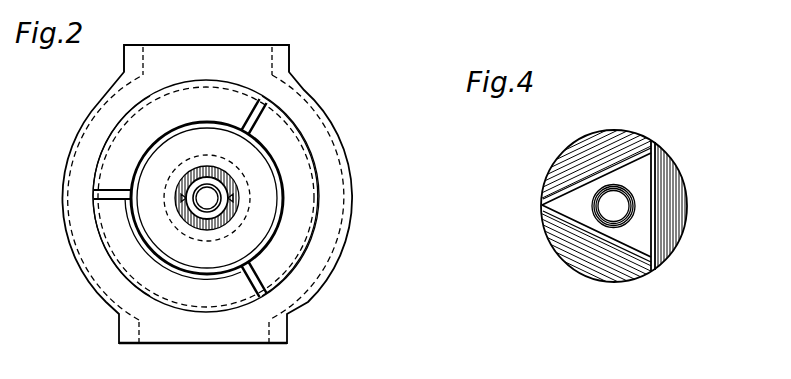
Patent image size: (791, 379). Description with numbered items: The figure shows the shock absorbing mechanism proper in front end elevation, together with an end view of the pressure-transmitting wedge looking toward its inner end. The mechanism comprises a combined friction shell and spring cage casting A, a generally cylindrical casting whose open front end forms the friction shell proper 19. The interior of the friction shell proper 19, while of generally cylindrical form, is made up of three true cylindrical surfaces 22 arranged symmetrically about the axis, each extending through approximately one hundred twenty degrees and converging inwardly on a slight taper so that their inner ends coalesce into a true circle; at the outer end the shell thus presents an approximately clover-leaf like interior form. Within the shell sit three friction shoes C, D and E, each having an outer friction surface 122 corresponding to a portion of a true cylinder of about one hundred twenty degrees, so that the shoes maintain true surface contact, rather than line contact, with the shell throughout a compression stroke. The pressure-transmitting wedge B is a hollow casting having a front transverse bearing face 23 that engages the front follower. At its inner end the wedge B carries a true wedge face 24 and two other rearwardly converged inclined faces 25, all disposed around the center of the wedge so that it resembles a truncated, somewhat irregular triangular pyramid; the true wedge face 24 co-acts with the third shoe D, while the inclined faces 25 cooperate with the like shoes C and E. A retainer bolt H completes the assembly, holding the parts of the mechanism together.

In FIG. 2, the friction shell proper 19 is at (350, 186).
In FIG. 2, the combined friction shell and spring cage casting A is at (165, 44).
In FIG. 2, the true cylindrical surfaces 22 is at (107, 137).
In FIG. 2, the outer friction surface 122 is at (268, 104).
In FIG. 2, the pressure-transmitting wedge B is at (204, 200).
In FIG. 4, the pressure-transmitting wedge B is at (565, 150).
In FIG. 2, the friction shoe C is at (130, 125).
In FIG. 2, the friction shoe D is at (305, 155).
In FIG. 2, the friction shoe E is at (135, 277).
In FIG. 2, the front transverse bearing face 23 is at (207, 210).
In FIG. 2, the retainer bolt H is at (207, 198).
In FIG. 4, the true wedge face 24 is at (677, 212).
In FIG. 4, the inclined faces 25 is at (541, 212).